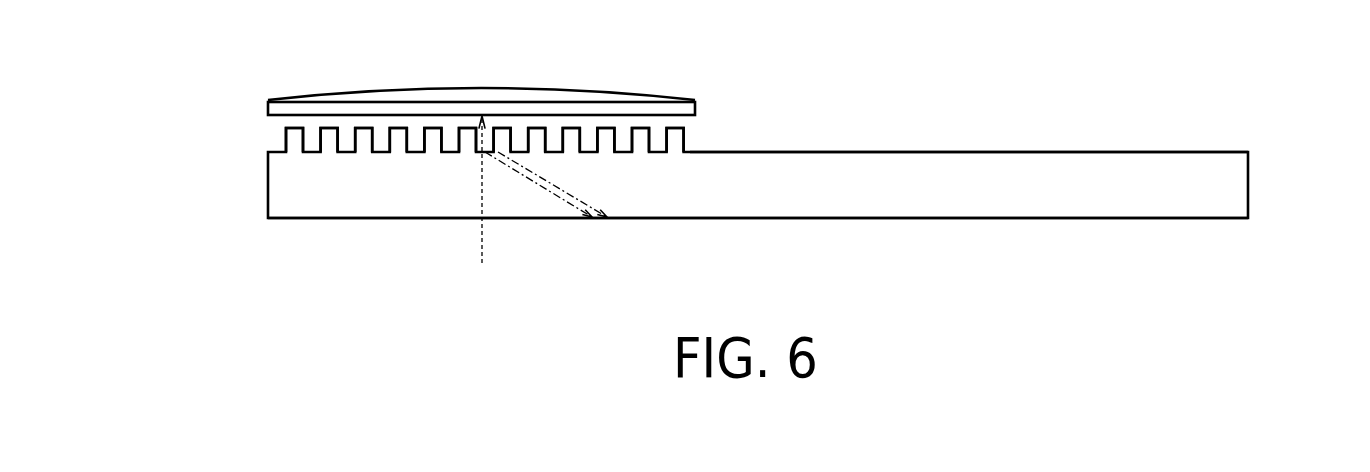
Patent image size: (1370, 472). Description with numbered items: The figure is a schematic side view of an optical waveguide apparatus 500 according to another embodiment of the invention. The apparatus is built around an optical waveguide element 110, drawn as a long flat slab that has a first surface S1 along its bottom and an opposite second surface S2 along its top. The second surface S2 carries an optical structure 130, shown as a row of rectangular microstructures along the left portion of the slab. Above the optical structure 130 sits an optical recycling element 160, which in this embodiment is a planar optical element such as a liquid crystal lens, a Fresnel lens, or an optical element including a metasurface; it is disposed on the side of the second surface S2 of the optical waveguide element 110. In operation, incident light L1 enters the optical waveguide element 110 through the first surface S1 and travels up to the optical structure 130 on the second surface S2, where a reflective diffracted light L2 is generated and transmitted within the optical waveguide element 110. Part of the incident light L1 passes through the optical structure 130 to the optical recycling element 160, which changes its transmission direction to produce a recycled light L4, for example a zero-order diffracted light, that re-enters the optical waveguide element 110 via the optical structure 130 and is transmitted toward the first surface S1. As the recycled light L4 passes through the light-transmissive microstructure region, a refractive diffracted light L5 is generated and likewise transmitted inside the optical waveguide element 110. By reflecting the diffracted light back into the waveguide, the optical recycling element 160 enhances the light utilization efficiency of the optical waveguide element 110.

The optical waveguide element 110 is at (1230, 185).
The optical structure 130 is at (258, 118).
The optical recycling element 160 is at (642, 95).
The optical waveguide apparatus 500 is at (1360, 320).
The first surface S1 is at (995, 219).
The second surface S2 is at (994, 152).
The incident light L1 is at (479, 211).
The reflective diffracted light L2 is at (549, 190).
The recycled light L4 is at (499, 148).
The refractive diffracted light L5 is at (565, 195).